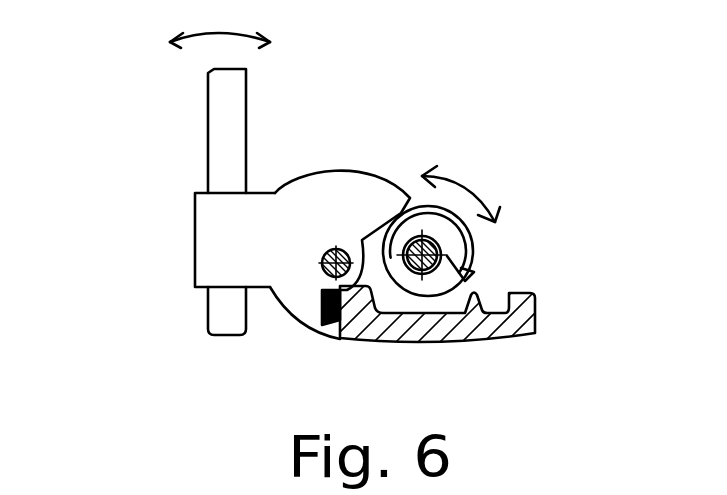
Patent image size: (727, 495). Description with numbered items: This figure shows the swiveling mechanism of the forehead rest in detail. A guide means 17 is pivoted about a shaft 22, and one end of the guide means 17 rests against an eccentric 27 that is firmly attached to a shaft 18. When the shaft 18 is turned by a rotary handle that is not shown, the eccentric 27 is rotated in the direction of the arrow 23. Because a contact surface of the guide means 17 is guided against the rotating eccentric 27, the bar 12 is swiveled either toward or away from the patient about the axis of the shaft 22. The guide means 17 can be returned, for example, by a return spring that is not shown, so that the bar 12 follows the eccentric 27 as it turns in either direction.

The bar 12 is at (223, 127).
The guide means 17 is at (212, 241).
The shaft 18 is at (432, 253).
The shaft 22 is at (327, 254).
The arrow 23 is at (472, 187).
The eccentric 27 is at (477, 278).